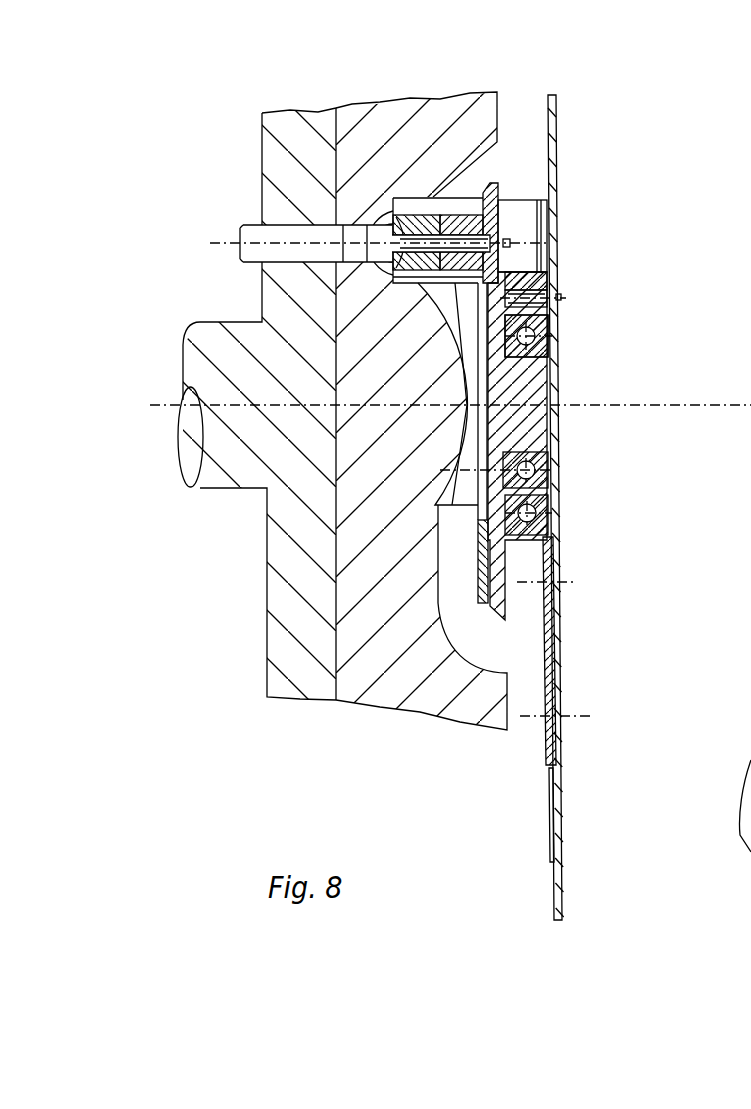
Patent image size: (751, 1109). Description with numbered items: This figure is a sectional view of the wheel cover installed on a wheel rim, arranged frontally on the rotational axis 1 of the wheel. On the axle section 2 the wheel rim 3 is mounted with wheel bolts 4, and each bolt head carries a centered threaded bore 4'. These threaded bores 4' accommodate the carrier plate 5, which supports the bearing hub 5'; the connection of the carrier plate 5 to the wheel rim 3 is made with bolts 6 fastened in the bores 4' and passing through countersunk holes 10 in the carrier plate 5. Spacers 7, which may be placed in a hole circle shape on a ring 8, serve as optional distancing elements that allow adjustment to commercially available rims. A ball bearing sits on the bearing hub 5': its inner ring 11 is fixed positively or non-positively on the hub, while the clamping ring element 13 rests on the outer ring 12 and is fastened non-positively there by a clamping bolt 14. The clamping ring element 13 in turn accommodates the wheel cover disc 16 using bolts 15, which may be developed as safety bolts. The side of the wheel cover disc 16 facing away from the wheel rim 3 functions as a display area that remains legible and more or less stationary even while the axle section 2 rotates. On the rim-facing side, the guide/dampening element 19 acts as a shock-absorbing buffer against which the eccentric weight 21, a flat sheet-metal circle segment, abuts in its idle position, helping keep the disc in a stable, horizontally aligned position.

The rotational axis 1 is at (596, 405).
The axle section 2 is at (285, 313).
The wheel rim 3 is at (383, 320).
The wheel bolt 4 is at (369, 221).
The threaded bore 4' is at (335, 204).
The carrier plate 5 is at (566, 446).
The bearing hub 5' is at (562, 401).
The bolt 6 is at (552, 203).
The spacer 7 is at (507, 255).
The ring 8 is at (487, 545).
The countersunk hole 10 is at (512, 243).
The inner ring 11 is at (556, 355).
The outer ring 12 is at (556, 323).
The clamping ring element 13 is at (553, 285).
The clamping bolt 14 is at (557, 521).
The bolt 15 is at (560, 297).
The wheel cover disc 16 is at (556, 130).
The guide/dampening element 19 is at (548, 621).
The eccentric weight 21 is at (557, 786).